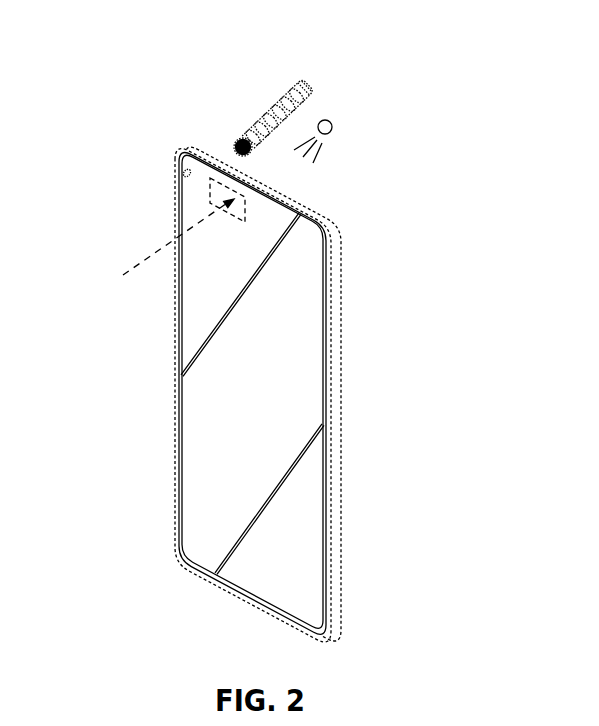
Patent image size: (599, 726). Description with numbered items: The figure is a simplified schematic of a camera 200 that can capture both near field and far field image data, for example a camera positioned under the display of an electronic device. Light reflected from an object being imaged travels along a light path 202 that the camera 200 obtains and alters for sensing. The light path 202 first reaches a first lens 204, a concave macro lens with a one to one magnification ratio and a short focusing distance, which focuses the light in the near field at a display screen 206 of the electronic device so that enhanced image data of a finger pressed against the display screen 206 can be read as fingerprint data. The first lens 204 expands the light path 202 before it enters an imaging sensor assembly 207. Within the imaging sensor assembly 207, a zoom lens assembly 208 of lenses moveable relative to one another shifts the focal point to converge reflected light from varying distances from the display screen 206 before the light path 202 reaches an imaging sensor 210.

The camera 200 is at (208, 114).
The light path 202 is at (150, 256).
The first lens 204 is at (236, 146).
The display screen 206 is at (190, 200).
The imaging sensor assembly 207 is at (294, 66).
The zoom lens assembly 208 is at (268, 91).
The imaging sensor 210 is at (310, 88).